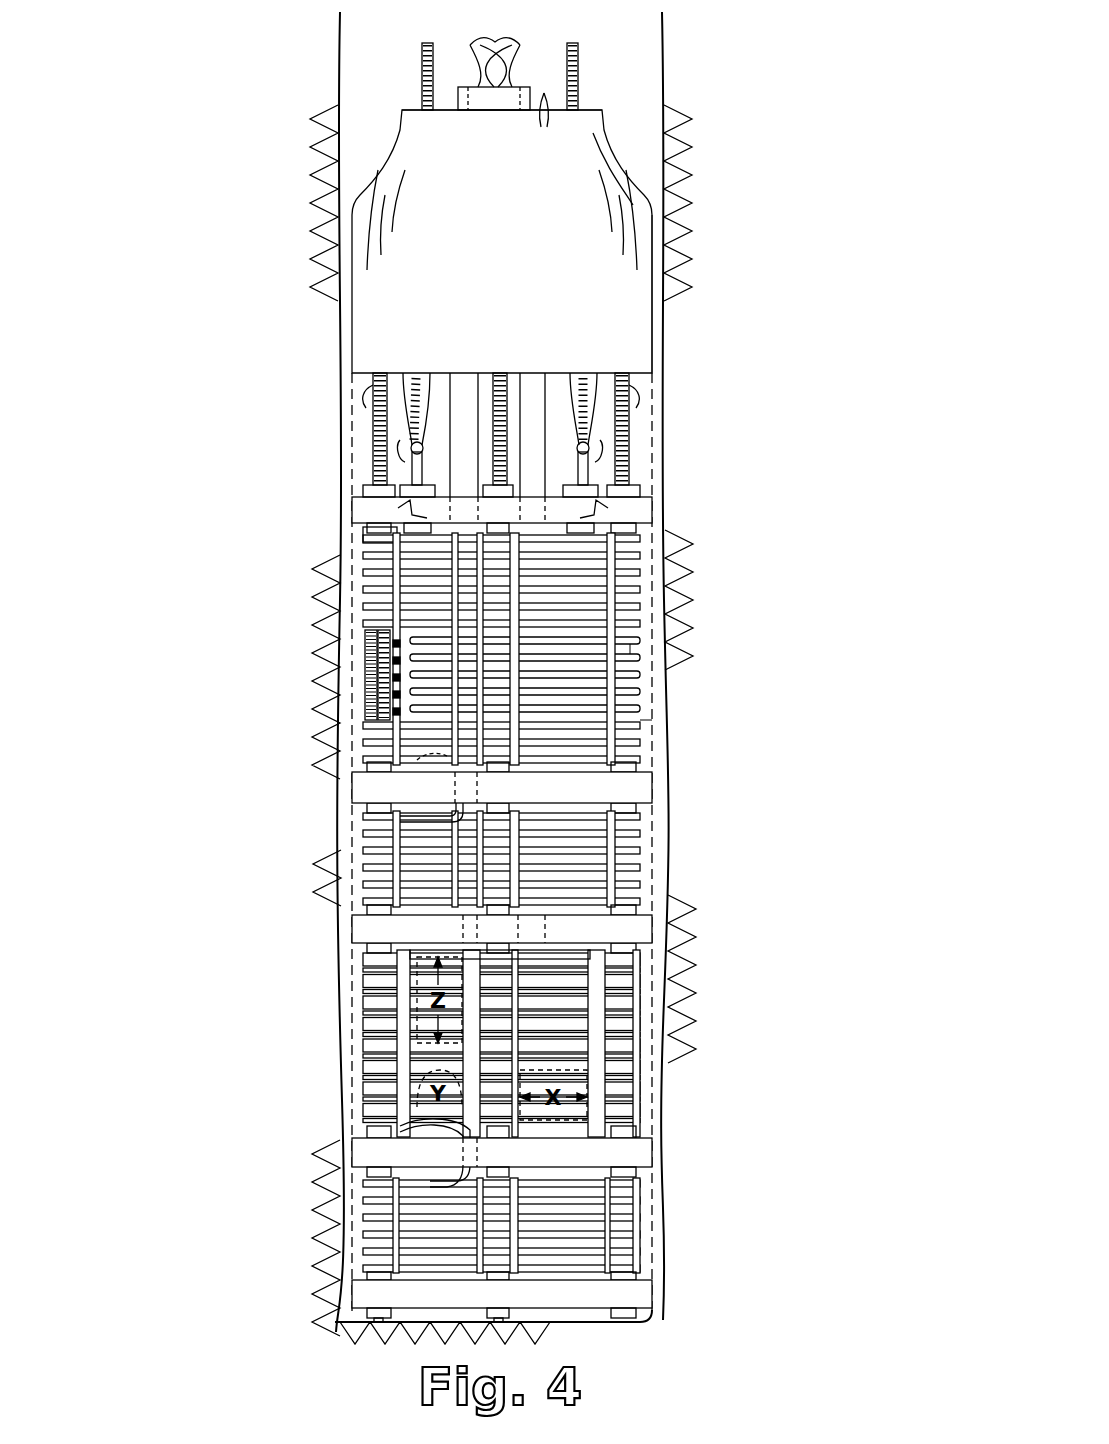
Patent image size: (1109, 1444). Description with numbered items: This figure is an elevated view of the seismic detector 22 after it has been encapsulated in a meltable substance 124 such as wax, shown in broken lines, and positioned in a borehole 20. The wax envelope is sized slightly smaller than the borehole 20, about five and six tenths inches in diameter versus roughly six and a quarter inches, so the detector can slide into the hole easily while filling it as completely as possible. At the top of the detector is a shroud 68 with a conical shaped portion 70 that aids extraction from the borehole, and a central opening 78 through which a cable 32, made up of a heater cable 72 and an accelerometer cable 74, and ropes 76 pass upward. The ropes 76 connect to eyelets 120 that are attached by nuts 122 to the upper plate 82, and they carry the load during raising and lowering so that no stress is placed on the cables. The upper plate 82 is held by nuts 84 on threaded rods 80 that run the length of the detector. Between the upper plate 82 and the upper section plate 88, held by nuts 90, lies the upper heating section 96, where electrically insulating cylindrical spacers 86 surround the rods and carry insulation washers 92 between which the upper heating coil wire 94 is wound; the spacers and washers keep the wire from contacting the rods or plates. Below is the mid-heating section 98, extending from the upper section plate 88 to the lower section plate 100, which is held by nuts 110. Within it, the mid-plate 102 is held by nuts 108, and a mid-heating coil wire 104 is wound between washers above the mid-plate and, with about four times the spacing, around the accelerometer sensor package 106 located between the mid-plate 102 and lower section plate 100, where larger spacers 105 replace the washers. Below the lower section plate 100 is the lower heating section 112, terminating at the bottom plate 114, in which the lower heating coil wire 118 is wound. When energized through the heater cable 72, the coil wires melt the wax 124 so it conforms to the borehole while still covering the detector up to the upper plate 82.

The borehole 20 is at (662, 90).
The seismic detector 22 is at (640, 168).
The cable 32 is at (478, 100).
The shroud 68 is at (652, 228).
The conical shaped portion 70 is at (388, 150).
The heater cable 72 is at (468, 40).
The accelerometer cable 74 is at (513, 40).
The ropes 76 is at (400, 378).
The central opening 78 is at (542, 118).
The threaded rods 80 is at (368, 400).
The upper plate 82 is at (355, 505).
The nuts 84 is at (367, 487).
The electrically insulating cylindrical spacers 86 is at (370, 690).
The upper section plate 88 is at (372, 790).
The nuts 90 is at (368, 767).
The insulation washers 92 is at (363, 600).
The upper heating coil wire 94 is at (630, 712).
The upper heating section 96 is at (352, 585).
The mid-heating section 98 is at (672, 978).
The lower section plate 100 is at (362, 1152).
The mid-plate 102 is at (372, 928).
The mid-heating coil wire 104 is at (630, 866).
The larger spacers 105 is at (370, 1022).
The accelerometer sensor package 106 is at (588, 1011).
The nuts 108 is at (370, 908).
The nuts 110 is at (378, 1130).
The lower heating section 112 is at (662, 1215).
The bottom plate 114 is at (635, 1296).
The lower heating coil wire 118 is at (368, 1262).
The eyelets 120 is at (410, 462).
The nuts 122 is at (501, 510).
The meltable substance 124 is at (652, 729).